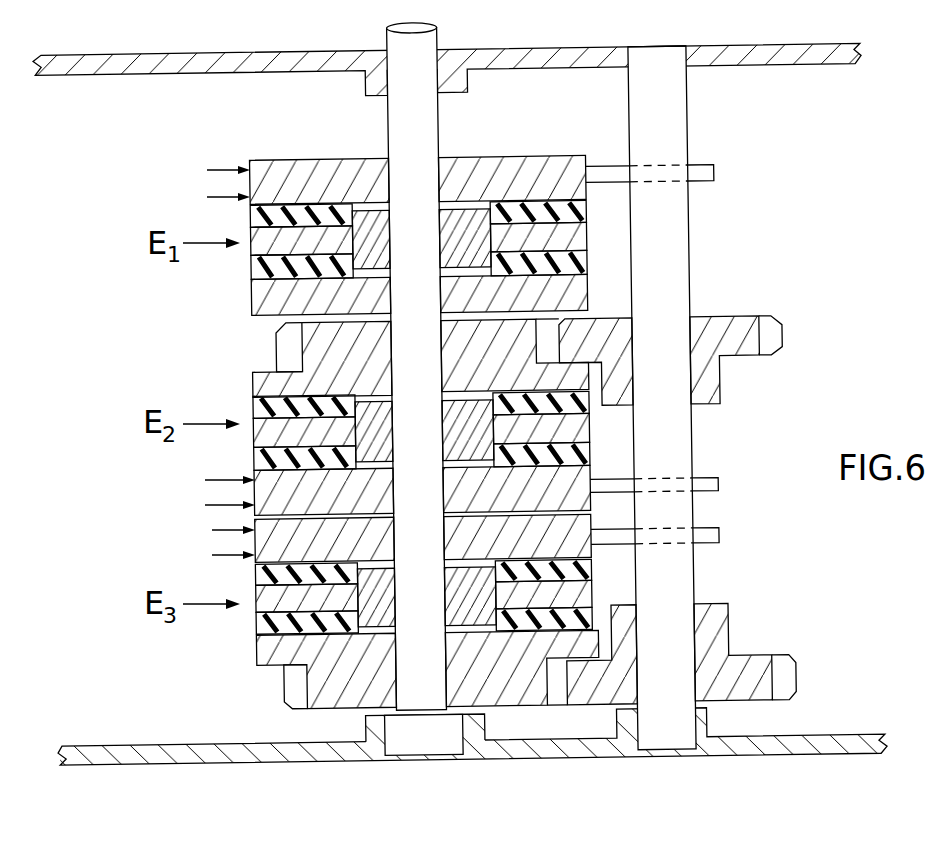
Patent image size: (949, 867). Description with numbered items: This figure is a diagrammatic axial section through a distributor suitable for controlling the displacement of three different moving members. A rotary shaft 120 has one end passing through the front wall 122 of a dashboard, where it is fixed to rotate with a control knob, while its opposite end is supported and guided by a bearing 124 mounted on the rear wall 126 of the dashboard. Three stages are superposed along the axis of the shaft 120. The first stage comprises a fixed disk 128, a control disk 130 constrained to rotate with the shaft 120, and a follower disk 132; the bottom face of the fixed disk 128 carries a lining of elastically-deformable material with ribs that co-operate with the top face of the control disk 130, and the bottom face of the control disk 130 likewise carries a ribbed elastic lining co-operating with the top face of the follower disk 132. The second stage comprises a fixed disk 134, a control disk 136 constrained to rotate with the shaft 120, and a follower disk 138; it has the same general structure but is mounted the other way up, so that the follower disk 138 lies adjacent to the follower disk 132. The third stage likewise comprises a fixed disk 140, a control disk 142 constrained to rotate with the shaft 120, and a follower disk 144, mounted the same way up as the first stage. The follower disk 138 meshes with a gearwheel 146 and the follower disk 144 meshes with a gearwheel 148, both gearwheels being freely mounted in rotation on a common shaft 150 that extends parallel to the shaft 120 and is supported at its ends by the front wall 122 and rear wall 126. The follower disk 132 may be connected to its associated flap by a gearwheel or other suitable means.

The rotary shaft 120 is at (442, 132).
The front wall 122 is at (492, 50).
The bearing 124 is at (423, 747).
The rear wall 126 is at (187, 716).
The fixed disk 128 is at (527, 158).
The control disk 130 is at (589, 236).
The follower disk 132 is at (589, 293).
The fixed disk 134 is at (589, 476).
The control disk 136 is at (589, 434).
The follower disk 138 is at (253, 386).
The fixed disk 140 is at (590, 518).
The control disk 142 is at (590, 605).
The follower disk 144 is at (595, 645).
The gearwheel 146 is at (722, 318).
The gearwheel 148 is at (725, 630).
The common shaft 150 is at (692, 263).